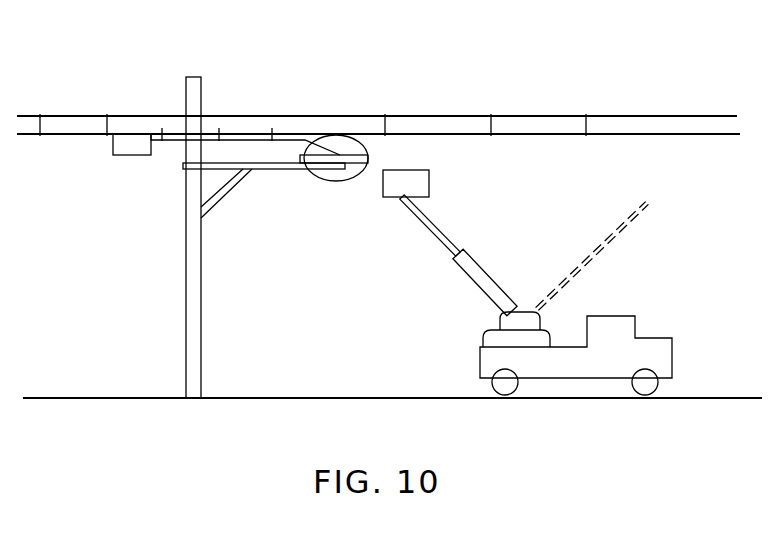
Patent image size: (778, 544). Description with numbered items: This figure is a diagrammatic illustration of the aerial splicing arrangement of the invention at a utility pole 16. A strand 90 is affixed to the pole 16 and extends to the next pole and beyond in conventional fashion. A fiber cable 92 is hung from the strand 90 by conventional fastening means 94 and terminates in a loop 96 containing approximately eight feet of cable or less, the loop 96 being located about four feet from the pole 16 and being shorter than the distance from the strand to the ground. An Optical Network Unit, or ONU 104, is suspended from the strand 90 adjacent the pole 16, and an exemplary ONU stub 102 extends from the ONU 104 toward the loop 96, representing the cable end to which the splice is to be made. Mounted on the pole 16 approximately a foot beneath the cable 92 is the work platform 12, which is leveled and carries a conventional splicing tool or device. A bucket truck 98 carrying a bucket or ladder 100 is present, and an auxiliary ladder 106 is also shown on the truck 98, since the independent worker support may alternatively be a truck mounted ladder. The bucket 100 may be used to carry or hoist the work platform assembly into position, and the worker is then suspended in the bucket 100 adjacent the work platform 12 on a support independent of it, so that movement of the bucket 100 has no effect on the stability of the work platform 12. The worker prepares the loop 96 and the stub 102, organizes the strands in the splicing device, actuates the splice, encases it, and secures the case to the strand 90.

The work platform 12 is at (357, 166).
The utility pole 16 is at (196, 75).
The strand 90 is at (86, 116).
The fiber cable 92 is at (565, 134).
The fastening means 94 is at (382, 115).
The loop 96 is at (360, 142).
The bucket truck 98 is at (562, 295).
The bucket or ladder 100 is at (429, 182).
The ONU stub 102 is at (287, 132).
The ONU 104 is at (140, 155).
The radio communication link 106 is at (648, 205).